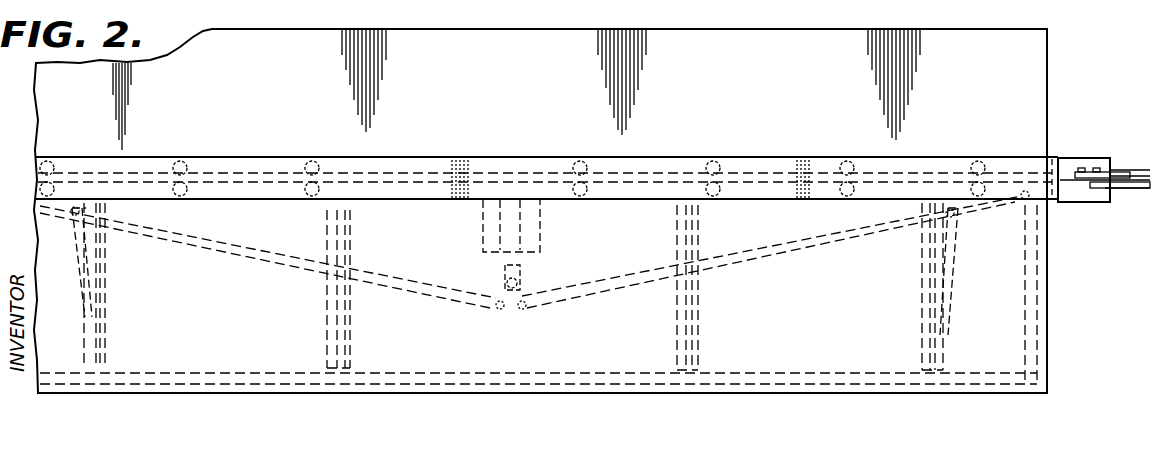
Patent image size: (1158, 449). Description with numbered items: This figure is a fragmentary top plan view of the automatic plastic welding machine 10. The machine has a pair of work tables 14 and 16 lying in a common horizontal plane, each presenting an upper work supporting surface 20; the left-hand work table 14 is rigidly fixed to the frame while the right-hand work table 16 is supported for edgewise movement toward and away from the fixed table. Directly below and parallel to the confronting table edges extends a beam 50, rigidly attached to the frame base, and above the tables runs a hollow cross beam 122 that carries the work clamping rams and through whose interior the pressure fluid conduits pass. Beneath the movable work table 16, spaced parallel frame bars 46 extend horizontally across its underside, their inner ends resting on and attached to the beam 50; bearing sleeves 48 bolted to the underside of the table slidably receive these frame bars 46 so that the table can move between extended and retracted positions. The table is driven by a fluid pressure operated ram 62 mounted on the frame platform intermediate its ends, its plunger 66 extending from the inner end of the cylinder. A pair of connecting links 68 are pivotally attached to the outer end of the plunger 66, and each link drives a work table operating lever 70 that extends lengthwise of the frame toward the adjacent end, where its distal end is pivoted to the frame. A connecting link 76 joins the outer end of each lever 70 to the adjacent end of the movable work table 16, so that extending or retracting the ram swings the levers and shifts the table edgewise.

The automatic plastic welding machine 10 is at (1073, 90).
The work table 14 is at (781, 43).
The work table 16 is at (988, 316).
The upper work supporting surfaces 20 is at (553, 97).
The cross beam 122 is at (634, 157).
The beam 50 is at (1081, 162).
The fluid pressure operated ram 62 is at (520, 233).
The plunger 66 is at (493, 262).
The connecting links 68 is at (495, 292).
The work table operating levers 70 is at (262, 258).
The bearing sleeves 48 is at (348, 318).
The frame bars 46 is at (345, 372).
The connecting link 76 is at (75, 258).